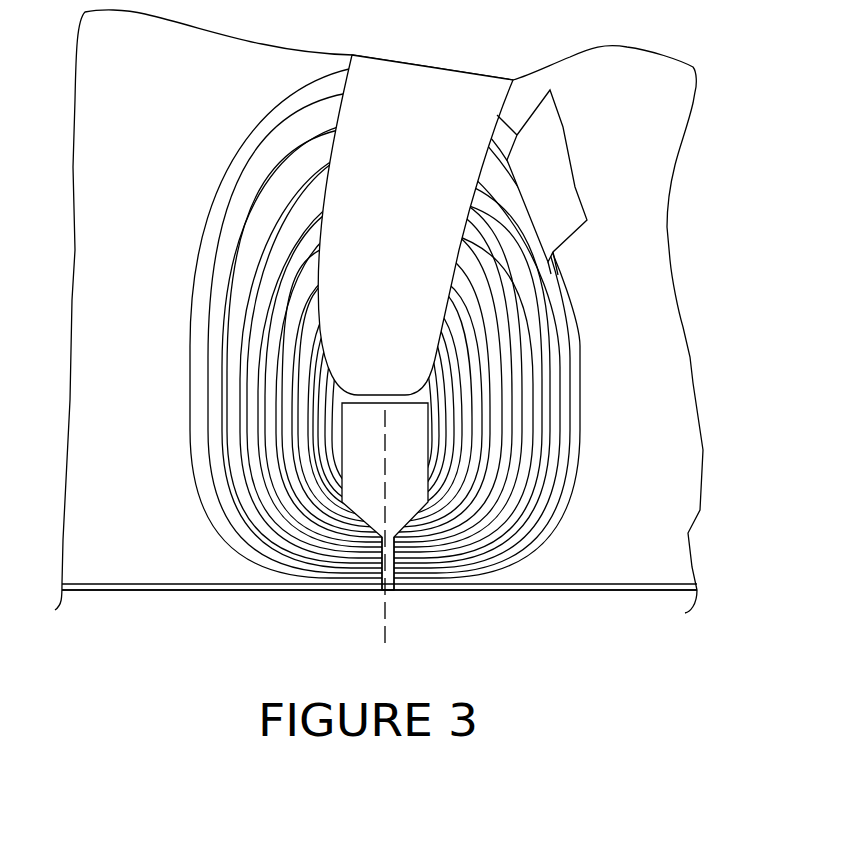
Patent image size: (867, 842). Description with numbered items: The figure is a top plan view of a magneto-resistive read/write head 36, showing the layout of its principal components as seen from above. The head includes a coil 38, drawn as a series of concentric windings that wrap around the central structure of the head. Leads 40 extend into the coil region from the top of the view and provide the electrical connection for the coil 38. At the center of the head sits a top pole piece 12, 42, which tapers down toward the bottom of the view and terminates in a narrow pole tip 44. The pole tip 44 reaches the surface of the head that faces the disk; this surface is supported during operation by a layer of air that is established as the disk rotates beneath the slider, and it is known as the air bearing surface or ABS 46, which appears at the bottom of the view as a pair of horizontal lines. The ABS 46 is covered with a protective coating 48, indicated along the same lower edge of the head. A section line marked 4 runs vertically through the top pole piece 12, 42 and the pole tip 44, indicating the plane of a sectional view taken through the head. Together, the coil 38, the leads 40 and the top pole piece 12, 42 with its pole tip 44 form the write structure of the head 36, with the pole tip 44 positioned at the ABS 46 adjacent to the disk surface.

The magneto-resistive head 36 is at (170, 219).
The coil 38 is at (565, 445).
The leads 40 is at (398, 159).
The top pole piece 12 is at (287, 522).
The top pole piece 42 is at (287, 522).
The pole tip 44 is at (396, 604).
The air bearing surface (ABS) 46 is at (592, 606).
The protective coating 48 is at (495, 593).
The section line 4- 4 is at (362, 417).